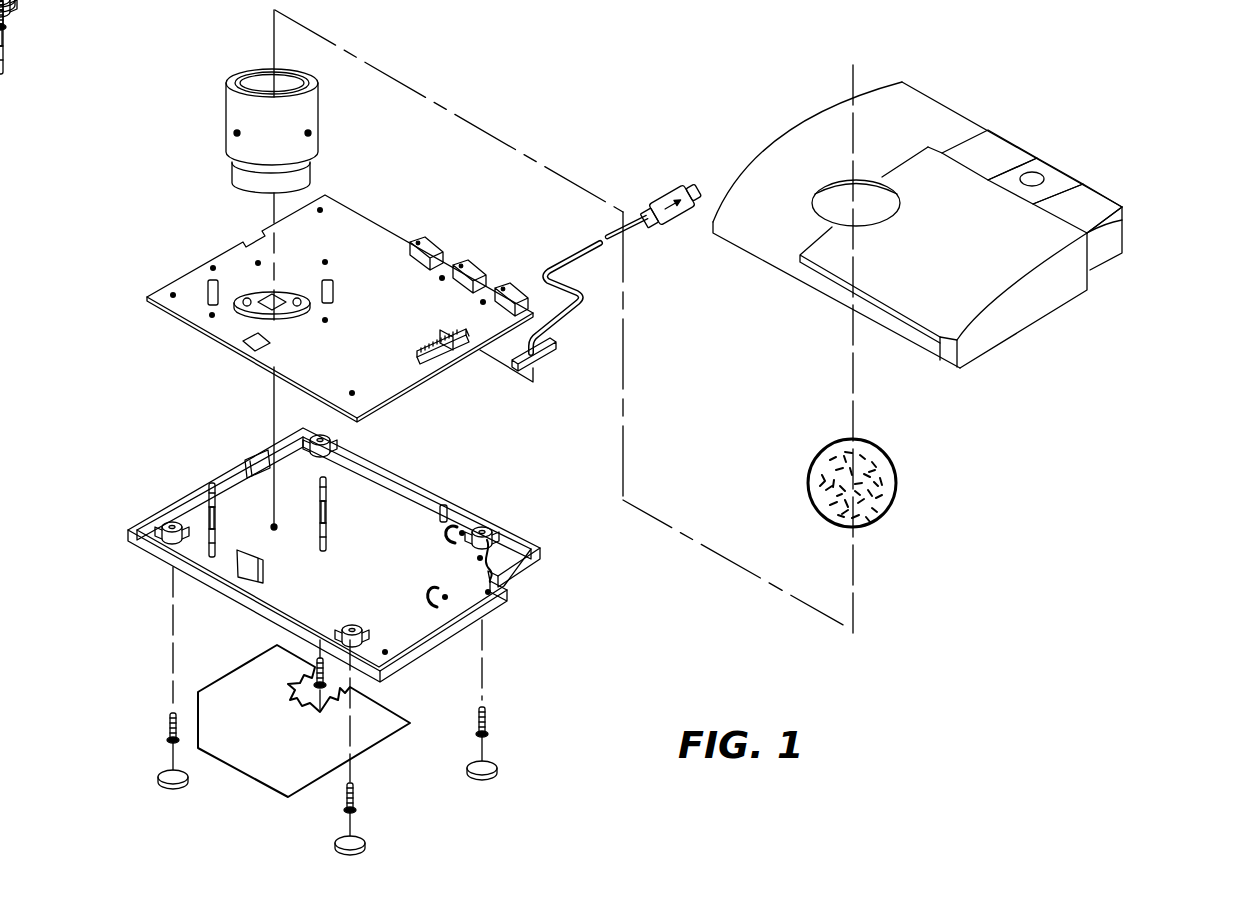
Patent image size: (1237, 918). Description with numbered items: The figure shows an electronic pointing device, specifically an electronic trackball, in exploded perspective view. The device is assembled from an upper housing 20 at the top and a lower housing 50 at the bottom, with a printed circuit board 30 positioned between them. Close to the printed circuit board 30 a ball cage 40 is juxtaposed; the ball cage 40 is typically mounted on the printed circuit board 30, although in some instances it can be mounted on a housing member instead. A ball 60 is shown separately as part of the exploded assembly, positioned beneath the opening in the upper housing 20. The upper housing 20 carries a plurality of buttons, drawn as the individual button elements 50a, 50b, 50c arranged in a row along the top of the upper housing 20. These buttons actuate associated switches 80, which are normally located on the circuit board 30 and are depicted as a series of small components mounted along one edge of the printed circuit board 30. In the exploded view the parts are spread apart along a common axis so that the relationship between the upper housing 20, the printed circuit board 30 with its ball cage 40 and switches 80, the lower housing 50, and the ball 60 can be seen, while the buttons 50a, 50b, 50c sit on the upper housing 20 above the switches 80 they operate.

The upper housing 20 is at (1127, 235).
The printed circuit board 30 is at (182, 271).
The ball cage 40 is at (227, 107).
The lower housing 50 is at (172, 505).
The first button 50a is at (1007, 140).
The second button 50b is at (1053, 170).
The third button 50c is at (1103, 193).
The ball 60 is at (893, 465).
The switches 80 is at (432, 245).